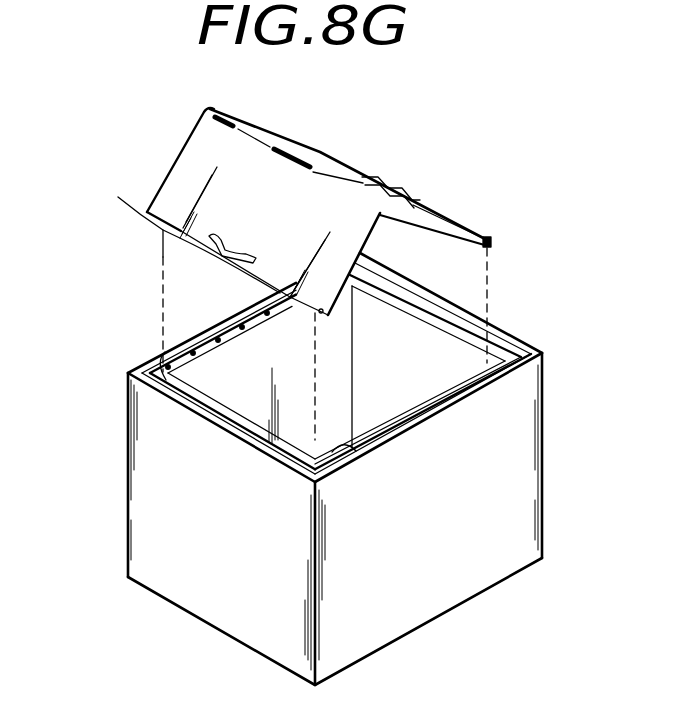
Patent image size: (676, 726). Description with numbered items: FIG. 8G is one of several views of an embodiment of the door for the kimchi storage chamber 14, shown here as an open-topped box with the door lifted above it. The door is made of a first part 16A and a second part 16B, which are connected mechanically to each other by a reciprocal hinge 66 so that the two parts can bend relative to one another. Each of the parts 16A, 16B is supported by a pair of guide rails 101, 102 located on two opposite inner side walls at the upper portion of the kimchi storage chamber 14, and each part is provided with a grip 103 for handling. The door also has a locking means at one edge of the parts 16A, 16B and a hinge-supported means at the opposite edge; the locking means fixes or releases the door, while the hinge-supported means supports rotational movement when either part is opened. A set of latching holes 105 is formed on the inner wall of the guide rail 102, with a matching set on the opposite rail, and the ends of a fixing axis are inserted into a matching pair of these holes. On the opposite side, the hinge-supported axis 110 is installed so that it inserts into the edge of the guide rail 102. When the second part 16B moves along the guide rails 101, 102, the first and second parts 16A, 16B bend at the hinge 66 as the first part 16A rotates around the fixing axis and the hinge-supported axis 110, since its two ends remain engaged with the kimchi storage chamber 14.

The kimchi storage chamber 14 is at (157, 462).
The first part 16A is at (332, 167).
The second part 16B is at (210, 166).
The reciprocal hinge 66 is at (413, 206).
The guide rail 101 is at (237, 347).
The guide rail 102 is at (357, 452).
The grip 103 is at (427, 147).
The latching holes 105 is at (172, 382).
The hinge-supported axis 110 is at (493, 236).